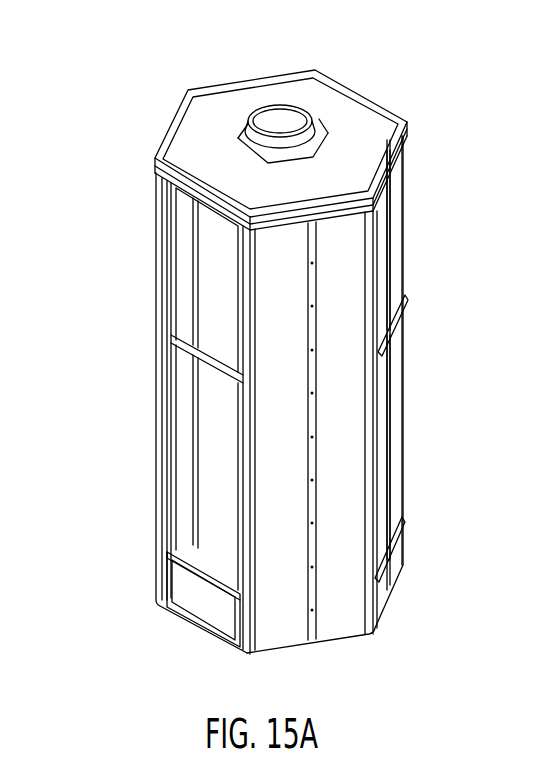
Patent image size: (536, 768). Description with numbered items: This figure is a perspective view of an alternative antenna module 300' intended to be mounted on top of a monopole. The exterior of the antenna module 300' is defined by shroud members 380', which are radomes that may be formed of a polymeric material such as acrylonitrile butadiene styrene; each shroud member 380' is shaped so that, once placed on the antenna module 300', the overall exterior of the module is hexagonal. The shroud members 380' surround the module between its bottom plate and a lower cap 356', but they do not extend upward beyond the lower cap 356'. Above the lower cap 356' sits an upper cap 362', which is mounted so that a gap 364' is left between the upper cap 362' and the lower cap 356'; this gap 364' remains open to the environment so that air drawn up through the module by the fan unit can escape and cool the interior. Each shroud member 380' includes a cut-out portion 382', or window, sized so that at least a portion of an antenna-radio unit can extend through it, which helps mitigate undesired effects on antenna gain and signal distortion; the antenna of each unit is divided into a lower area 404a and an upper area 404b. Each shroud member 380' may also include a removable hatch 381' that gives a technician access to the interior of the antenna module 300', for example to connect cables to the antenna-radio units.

The antenna module 300' is at (271, 357).
The lower cap 356' is at (281, 126).
The upper cap 362' is at (330, 85).
The gap 364' is at (345, 119).
The lower area of antenna 404a is at (178, 258).
The upper area of antenna 404b is at (178, 452).
The cut-out portion 382' is at (153, 413).
The removable hatch 381' is at (195, 619).
The shroud member 380' is at (359, 413).